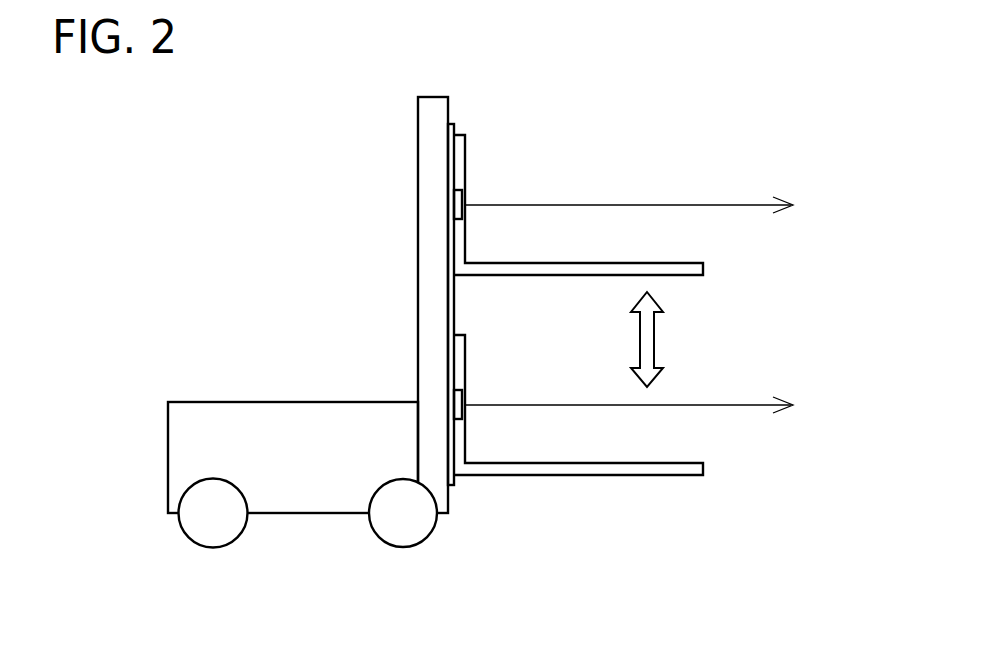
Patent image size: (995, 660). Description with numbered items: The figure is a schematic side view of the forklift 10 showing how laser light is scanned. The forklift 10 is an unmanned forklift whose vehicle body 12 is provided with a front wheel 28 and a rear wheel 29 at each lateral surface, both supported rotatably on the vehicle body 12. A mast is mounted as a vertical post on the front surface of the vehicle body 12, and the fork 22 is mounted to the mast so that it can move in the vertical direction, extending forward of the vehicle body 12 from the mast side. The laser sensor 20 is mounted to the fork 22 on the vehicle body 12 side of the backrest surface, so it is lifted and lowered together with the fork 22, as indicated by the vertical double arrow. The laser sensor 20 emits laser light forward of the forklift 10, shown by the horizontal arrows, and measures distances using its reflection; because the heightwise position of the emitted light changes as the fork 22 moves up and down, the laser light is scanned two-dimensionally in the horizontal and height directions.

The forklift 10 is at (172, 124).
The vehicle body 12 is at (192, 418).
The laser sensor 20 is at (466, 396).
The fork 22 is at (577, 472).
The front wheel 28 is at (403, 531).
The rear wheel 29 is at (213, 531).